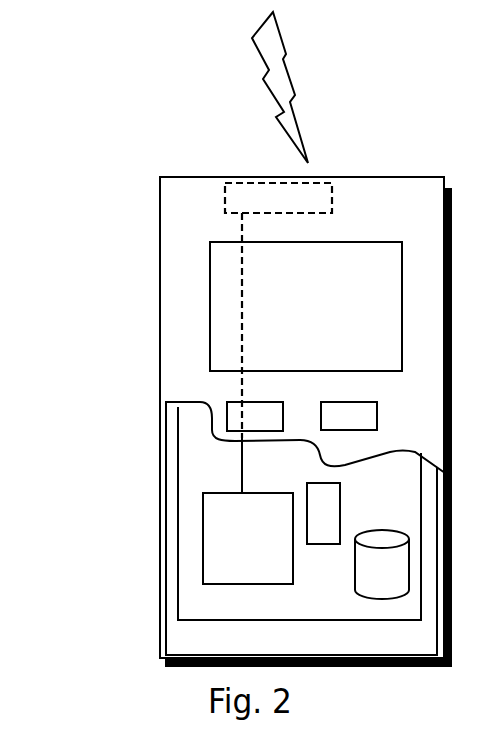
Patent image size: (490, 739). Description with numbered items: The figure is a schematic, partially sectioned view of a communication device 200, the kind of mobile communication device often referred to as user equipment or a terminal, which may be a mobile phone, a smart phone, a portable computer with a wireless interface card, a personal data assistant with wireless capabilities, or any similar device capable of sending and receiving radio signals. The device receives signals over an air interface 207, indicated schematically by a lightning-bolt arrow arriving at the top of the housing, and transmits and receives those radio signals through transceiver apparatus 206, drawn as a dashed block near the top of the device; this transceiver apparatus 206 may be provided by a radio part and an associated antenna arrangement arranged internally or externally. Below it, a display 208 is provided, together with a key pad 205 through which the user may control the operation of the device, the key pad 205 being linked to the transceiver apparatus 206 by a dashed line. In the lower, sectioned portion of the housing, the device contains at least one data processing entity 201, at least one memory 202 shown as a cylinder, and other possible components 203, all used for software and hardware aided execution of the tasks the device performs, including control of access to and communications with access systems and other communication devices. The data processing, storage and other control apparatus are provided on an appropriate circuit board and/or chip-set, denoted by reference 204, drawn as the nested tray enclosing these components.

The communication device 200 is at (163, 218).
The data processing entity 201 is at (212, 523).
The memory 202 is at (377, 577).
The other possible components 203 is at (323, 498).
The circuit board and/or chip-set 204 is at (203, 603).
The key pad 205 is at (230, 417).
The transceiver apparatus 206 is at (322, 191).
The air interface 207 is at (306, 116).
The display 208 is at (227, 295).